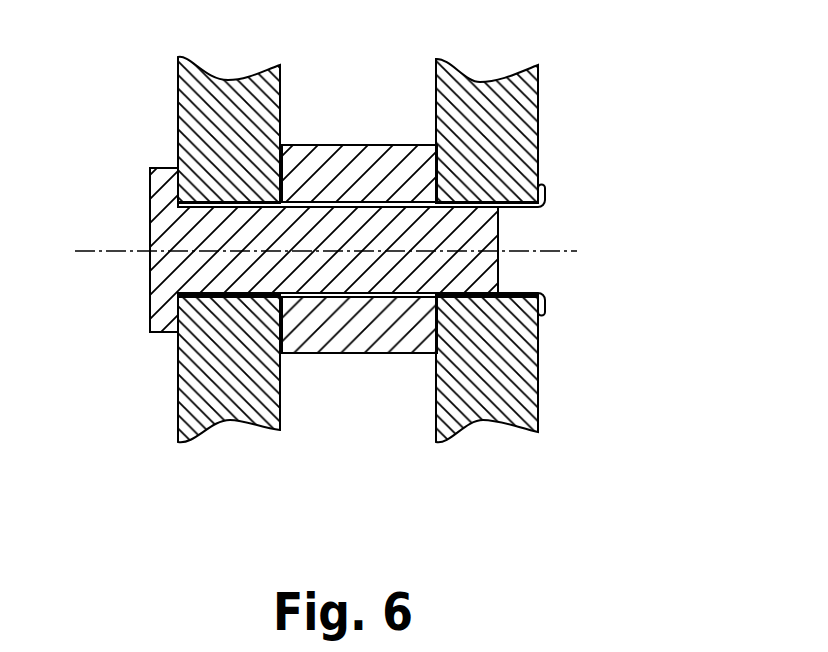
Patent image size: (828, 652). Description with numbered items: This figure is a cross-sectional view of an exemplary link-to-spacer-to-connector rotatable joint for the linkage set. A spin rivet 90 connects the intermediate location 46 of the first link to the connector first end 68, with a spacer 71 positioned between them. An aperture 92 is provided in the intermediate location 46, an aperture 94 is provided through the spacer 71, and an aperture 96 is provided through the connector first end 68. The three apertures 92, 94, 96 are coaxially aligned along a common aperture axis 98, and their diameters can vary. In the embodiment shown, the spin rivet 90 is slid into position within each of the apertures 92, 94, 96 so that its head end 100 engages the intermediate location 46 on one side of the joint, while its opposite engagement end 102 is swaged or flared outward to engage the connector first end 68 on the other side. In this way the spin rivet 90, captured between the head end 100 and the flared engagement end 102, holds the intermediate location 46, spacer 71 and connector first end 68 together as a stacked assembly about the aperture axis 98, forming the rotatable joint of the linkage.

The intermediate location 46 is at (193, 87).
The connector first end 68 is at (537, 128).
The spacer 71 is at (343, 162).
The spin rivet 90 is at (150, 202).
The aperture 92 is at (207, 300).
The aperture 94 is at (303, 295).
The aperture 96 is at (537, 338).
The aperture axis 98 is at (567, 253).
The head end 100 is at (157, 318).
The engagement end 102 is at (547, 197).